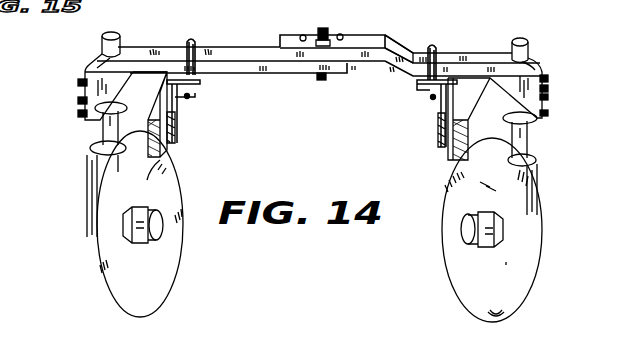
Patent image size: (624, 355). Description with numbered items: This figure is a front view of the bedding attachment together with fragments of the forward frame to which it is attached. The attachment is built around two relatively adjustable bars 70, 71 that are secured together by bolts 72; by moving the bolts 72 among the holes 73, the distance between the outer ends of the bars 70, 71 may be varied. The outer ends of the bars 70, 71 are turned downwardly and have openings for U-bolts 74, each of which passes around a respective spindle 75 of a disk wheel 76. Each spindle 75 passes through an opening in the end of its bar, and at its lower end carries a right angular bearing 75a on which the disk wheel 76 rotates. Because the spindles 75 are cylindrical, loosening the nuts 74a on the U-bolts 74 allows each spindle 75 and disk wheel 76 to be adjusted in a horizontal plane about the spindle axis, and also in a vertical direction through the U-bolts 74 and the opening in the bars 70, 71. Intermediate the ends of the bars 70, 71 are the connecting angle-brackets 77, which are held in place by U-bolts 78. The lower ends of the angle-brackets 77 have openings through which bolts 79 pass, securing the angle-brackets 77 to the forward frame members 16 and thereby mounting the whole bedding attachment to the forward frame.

The forward frame member 16 is at (158, 112).
The adjustable bar 70 is at (392, 45).
The adjustable bar 71 is at (250, 48).
The bolt 72 is at (324, 28).
The hole 73 is at (303, 37).
The U-bolt 74 is at (98, 120).
The nut 74a is at (560, 78).
The spindle 75 is at (96, 150).
The right angular bearing 75a is at (160, 228).
The disk wheel 76 is at (103, 258).
The connecting angle-bracket 77 is at (178, 90).
The U-bolt 78 is at (208, 28).
The bolt 79 is at (176, 130).